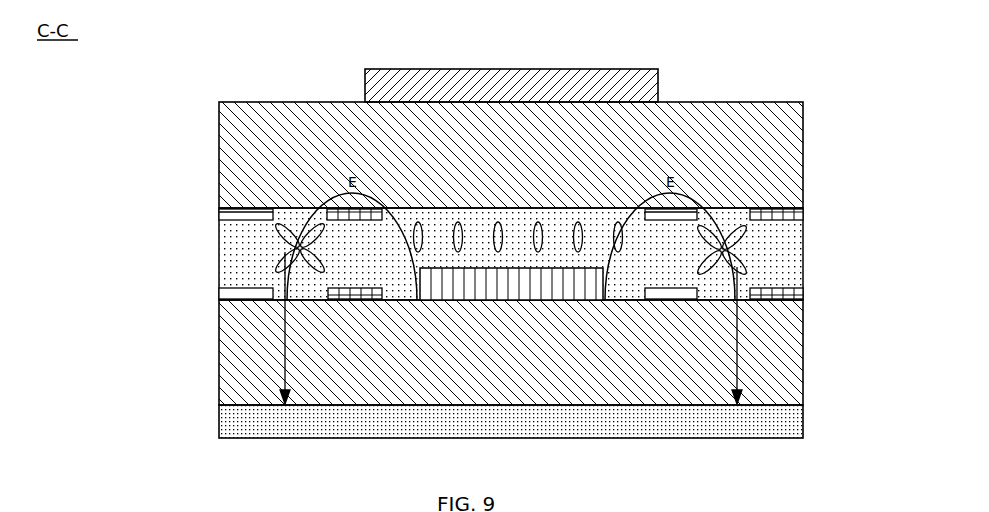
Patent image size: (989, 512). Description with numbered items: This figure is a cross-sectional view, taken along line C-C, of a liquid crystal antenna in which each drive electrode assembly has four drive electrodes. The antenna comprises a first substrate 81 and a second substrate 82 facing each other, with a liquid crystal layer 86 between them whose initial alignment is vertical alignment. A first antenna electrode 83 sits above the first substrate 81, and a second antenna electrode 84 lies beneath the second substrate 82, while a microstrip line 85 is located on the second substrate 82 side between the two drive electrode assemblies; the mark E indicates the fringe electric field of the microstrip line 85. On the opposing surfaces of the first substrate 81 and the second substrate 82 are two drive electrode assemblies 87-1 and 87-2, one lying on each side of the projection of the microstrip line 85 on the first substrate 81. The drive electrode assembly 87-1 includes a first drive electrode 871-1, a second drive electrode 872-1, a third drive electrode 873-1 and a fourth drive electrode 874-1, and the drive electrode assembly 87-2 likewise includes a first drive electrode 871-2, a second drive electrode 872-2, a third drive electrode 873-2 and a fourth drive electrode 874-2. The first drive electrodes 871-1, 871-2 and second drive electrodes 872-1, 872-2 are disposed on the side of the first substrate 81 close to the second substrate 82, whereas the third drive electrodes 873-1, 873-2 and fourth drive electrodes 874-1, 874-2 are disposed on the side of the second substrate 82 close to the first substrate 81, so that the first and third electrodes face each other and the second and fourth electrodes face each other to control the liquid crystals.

The first substrate 81 is at (723, 100).
The second substrate 82 is at (802, 370).
The first antenna electrode 83 is at (622, 67).
The second antenna electrode 84 is at (803, 422).
The microstrip line 85 is at (505, 300).
The liquid crystal layer 86 is at (626, 287).
The drive electrode assembly 87-1 is at (219, 221).
The drive electrode assembly 87-2 is at (800, 229).
The first drive electrode 871-1 is at (240, 208).
The second drive electrode 872-1 is at (337, 208).
The third drive electrode 873-1 is at (245, 288).
The fourth drive electrode 874-1 is at (343, 288).
The first drive electrode 871-2 is at (688, 210).
The second drive electrode 872-2 is at (773, 210).
The third drive electrode 873-2 is at (683, 287).
The fourth drive electrode 874-2 is at (763, 287).